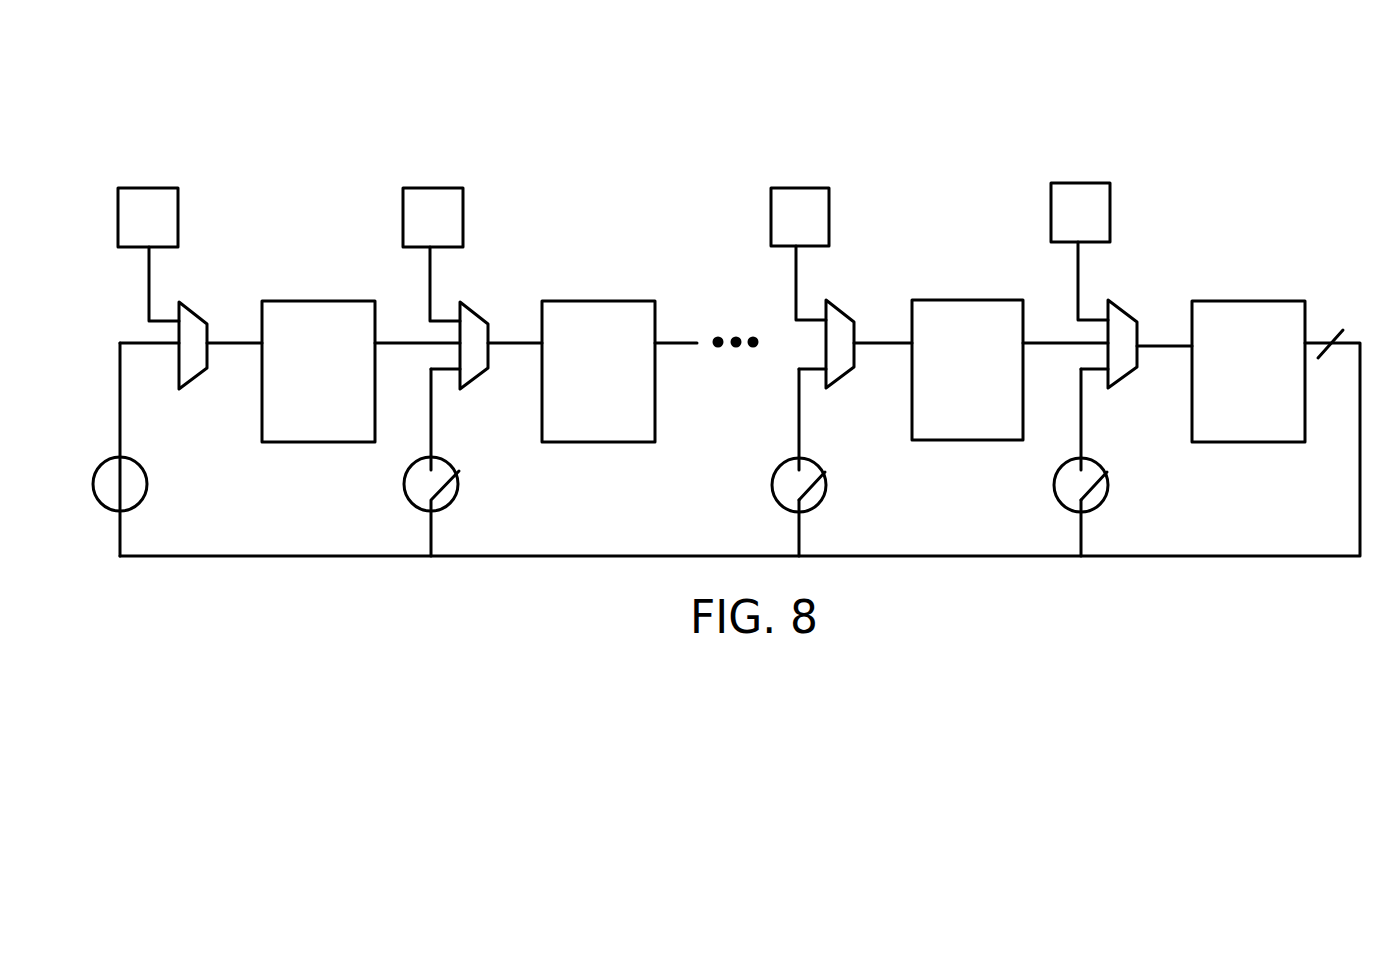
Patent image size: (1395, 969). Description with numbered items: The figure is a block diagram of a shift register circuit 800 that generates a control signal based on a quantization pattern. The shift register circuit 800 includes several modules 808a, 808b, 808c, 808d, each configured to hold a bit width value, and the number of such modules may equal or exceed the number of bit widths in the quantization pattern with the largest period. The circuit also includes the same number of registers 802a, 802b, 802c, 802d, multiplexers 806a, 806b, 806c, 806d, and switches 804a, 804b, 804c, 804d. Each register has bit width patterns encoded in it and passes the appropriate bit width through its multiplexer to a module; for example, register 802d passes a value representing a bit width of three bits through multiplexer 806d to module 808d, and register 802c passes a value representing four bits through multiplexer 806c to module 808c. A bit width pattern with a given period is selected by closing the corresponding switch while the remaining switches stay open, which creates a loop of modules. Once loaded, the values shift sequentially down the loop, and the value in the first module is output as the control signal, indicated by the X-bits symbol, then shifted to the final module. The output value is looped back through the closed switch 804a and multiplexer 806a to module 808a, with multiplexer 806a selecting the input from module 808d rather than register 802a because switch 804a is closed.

The shift register circuit 800 is at (952, 72).
The register 802a is at (172, 188).
The register 802b is at (465, 174).
The register 802c is at (823, 188).
The register 802d is at (1097, 183).
The switch 804a is at (157, 456).
The switch 804b is at (454, 470).
The switch 804c is at (822, 470).
The switch 804d is at (1104, 470).
The multiplexer 806a is at (189, 310).
The multiplexer 806b is at (486, 296).
The multiplexer 806c is at (852, 296).
The multiplexer 806d is at (1133, 296).
The module 808a is at (333, 301).
The module 808b is at (613, 301).
The module 808c is at (990, 288).
The module 808d is at (1257, 301).